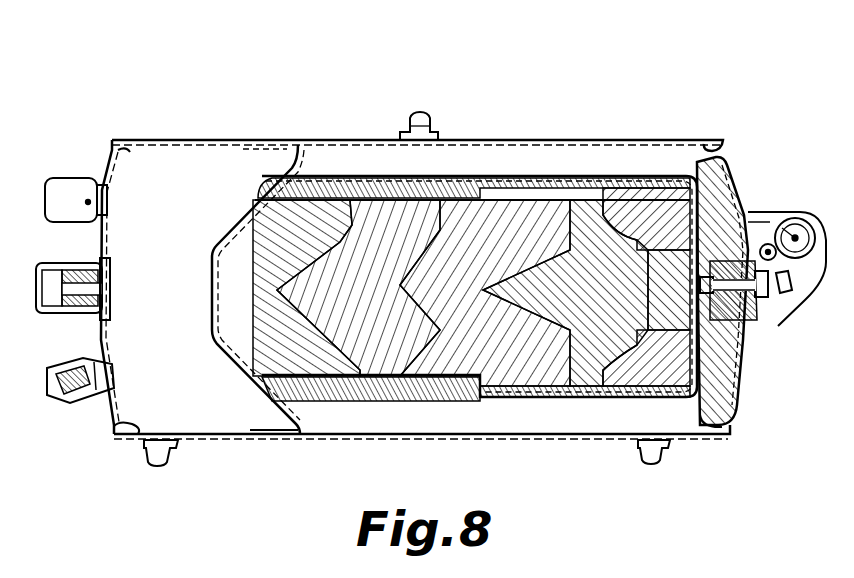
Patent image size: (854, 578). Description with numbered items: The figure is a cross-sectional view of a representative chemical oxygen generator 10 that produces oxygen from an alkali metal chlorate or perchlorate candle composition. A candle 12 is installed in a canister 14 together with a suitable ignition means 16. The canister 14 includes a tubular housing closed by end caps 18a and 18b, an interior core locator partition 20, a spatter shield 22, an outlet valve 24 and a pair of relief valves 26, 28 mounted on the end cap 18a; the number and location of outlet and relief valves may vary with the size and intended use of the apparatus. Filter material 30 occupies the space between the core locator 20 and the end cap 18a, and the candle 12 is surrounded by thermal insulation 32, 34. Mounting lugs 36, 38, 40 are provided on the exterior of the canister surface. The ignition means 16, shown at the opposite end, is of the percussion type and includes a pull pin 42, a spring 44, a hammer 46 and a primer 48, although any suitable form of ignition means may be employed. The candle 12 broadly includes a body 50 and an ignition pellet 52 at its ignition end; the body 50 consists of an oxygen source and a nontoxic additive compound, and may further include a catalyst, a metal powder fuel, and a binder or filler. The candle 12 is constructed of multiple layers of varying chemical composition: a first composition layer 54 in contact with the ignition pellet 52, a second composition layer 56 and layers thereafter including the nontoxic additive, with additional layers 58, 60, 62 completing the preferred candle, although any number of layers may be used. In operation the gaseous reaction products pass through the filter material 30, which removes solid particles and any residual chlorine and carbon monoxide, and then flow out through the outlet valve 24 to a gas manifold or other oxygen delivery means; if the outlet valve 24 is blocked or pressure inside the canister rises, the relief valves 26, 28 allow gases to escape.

The chemical oxygen generator 10 is at (272, 68).
The candle 12 is at (325, 200).
The canister 14 is at (355, 140).
The ignition means 16 is at (766, 160).
The end cap 18a is at (114, 426).
The end cap 18b is at (740, 405).
The core locator partition 20 is at (305, 432).
The spatter shield 22 is at (528, 397).
The outlet valve 24 is at (36, 288).
The relief valve 26 is at (45, 197).
The relief valve 28 is at (50, 372).
The filter material 30 is at (160, 180).
The thermal insulation 32 is at (383, 400).
The thermal insulation 34 is at (724, 152).
The mounting lug 36 is at (425, 123).
The mounting lug 38 is at (668, 455).
The mounting lug 40 is at (150, 462).
The pull pin 42 is at (790, 242).
The spring 44 is at (790, 288).
The hammer 46 is at (772, 300).
The primer 48 is at (752, 322).
The body 50 is at (427, 390).
The ignition pellet 52 is at (672, 290).
The first composition layer 54 is at (646, 219).
The second composition layer 56 is at (565, 293).
The additional layer 58 is at (483, 293).
The additional layer 60 is at (358, 288).
The additional layer 62 is at (306, 288).